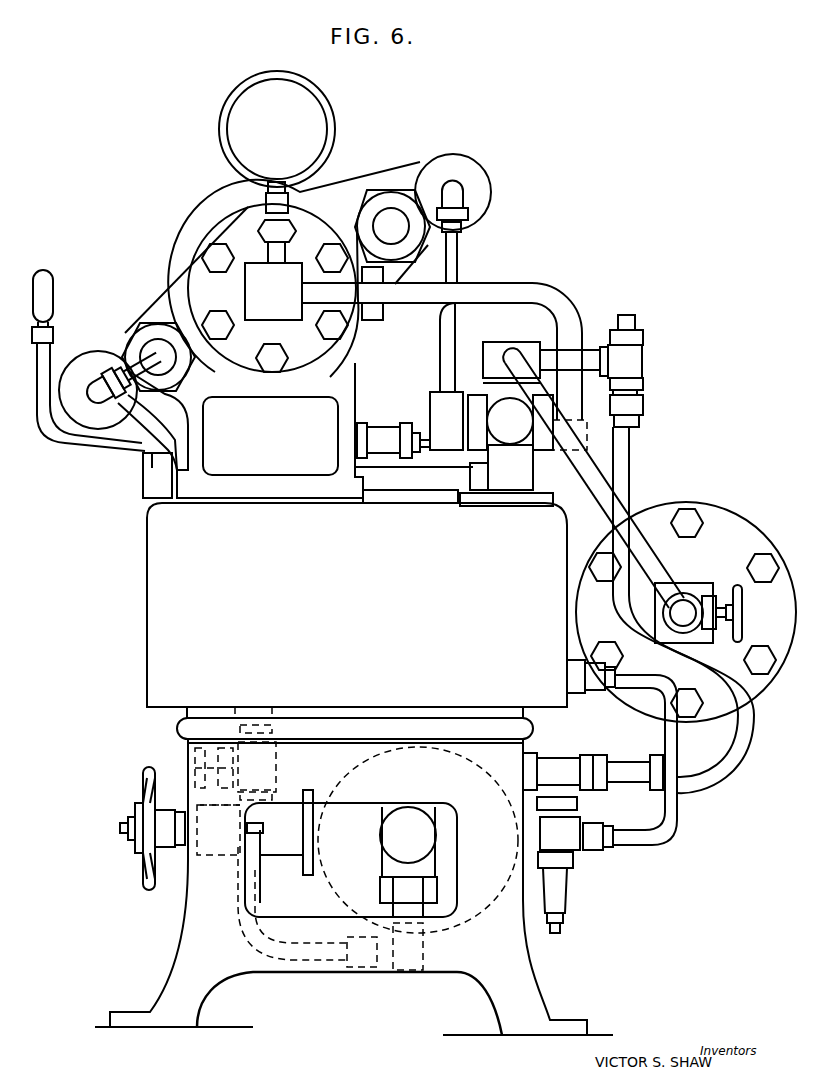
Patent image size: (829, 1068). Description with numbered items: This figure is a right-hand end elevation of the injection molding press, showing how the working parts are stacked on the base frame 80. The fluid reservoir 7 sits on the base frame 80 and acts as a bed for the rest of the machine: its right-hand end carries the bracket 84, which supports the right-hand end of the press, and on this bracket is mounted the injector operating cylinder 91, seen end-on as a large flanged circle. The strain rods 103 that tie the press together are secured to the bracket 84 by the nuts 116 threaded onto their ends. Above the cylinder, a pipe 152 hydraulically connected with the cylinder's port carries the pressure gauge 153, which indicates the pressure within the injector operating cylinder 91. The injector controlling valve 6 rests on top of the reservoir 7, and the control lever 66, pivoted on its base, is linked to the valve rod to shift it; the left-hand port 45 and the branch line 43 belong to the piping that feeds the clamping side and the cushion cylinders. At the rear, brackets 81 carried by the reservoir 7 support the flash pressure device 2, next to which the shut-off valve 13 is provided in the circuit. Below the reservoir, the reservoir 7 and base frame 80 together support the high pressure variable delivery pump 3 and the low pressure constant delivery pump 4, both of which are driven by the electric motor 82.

The pressure gauge 153 is at (360, 125).
The pipe 152 is at (280, 251).
The injector operating cylinder 91 is at (197, 273).
The nuts 116 is at (384, 200).
The strain rods 103 is at (378, 218).
The left-hand port 45 is at (455, 266).
The control lever 66 is at (43, 312).
The branch line 43 is at (153, 428).
The bracket 84 is at (348, 403).
The injector controlling valve 6 is at (480, 392).
The reservoir 7 is at (160, 556).
The brackets 81 is at (578, 543).
The flash pressure device 2 is at (730, 513).
The shut-off valve 13 is at (740, 600).
The base frame 80 is at (523, 975).
The high pressure variable delivery pump 3 is at (143, 863).
The electric motor 82 is at (337, 883).
The low pressure constant delivery pump 4 is at (390, 863).